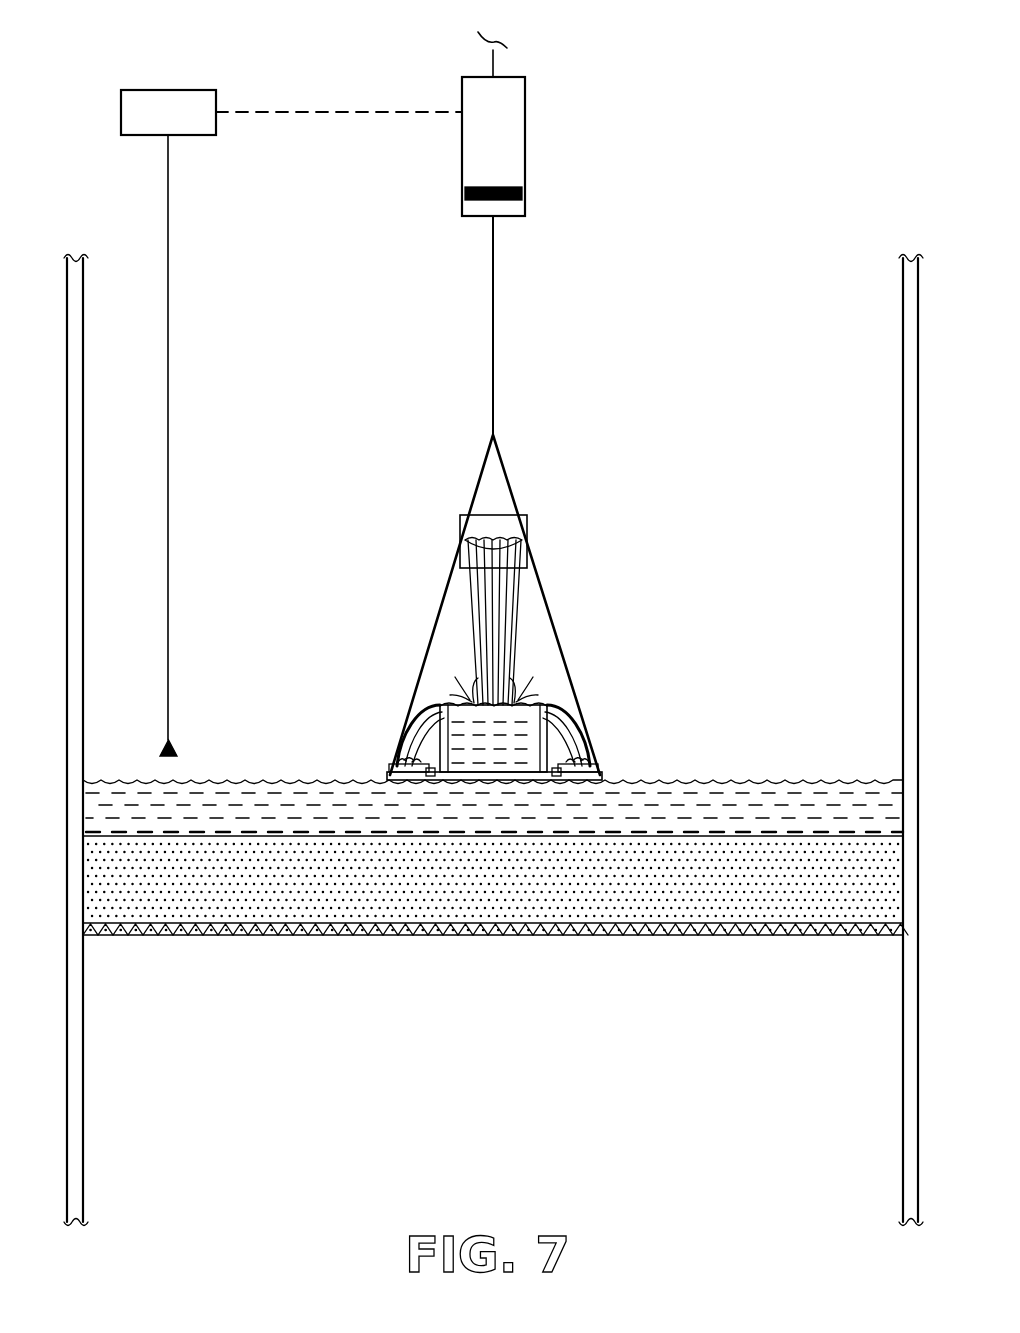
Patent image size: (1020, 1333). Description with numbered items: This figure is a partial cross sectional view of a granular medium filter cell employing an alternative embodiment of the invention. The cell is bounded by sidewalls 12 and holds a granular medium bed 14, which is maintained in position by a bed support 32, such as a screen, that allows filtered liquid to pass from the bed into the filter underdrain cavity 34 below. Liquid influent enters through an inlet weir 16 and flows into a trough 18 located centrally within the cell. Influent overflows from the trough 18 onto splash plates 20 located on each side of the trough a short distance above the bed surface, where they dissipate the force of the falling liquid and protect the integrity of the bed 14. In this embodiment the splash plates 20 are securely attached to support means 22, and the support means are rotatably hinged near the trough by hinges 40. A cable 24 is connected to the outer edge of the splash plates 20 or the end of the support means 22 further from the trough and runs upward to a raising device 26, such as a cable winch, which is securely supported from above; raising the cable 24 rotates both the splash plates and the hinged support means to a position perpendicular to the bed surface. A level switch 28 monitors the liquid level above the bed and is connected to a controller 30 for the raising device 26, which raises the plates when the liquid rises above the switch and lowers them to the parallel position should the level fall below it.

The sidewalls 12 is at (82, 306).
The granular medium bed 14 is at (202, 902).
The inlet weir 16 is at (527, 523).
The trough 18 is at (547, 713).
The splash plates 20 is at (395, 763).
The support means 22 is at (407, 780).
The cable 24 is at (483, 478).
The raising device 26 is at (525, 128).
The level switch 28 is at (178, 748).
The controller 30 is at (168, 92).
The bed support 32 is at (287, 935).
The filter underdrain cavity 34 is at (508, 1023).
The hinges 40 is at (417, 738).